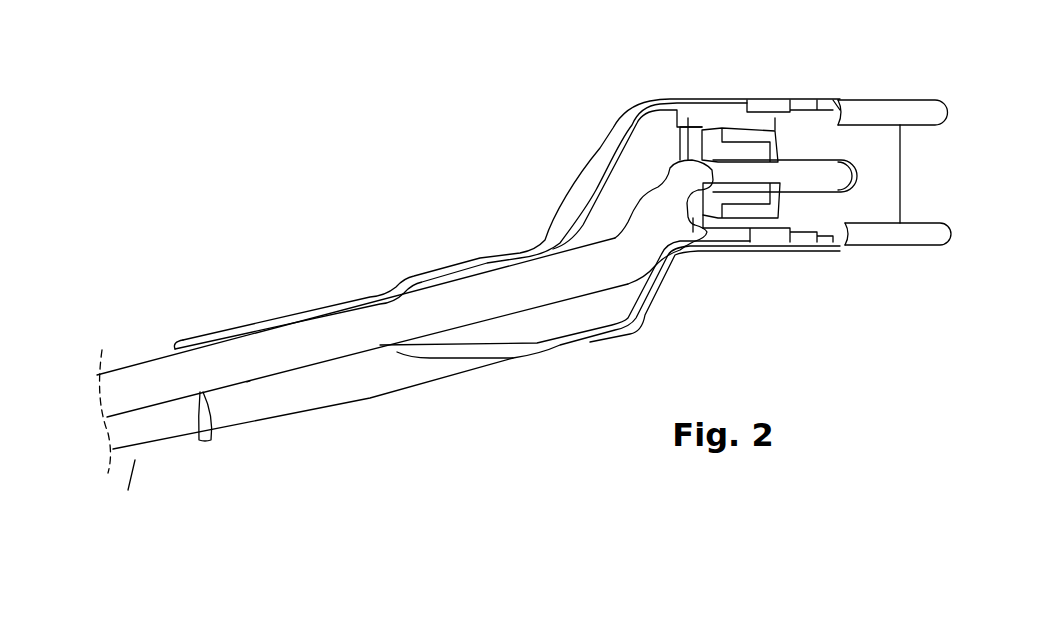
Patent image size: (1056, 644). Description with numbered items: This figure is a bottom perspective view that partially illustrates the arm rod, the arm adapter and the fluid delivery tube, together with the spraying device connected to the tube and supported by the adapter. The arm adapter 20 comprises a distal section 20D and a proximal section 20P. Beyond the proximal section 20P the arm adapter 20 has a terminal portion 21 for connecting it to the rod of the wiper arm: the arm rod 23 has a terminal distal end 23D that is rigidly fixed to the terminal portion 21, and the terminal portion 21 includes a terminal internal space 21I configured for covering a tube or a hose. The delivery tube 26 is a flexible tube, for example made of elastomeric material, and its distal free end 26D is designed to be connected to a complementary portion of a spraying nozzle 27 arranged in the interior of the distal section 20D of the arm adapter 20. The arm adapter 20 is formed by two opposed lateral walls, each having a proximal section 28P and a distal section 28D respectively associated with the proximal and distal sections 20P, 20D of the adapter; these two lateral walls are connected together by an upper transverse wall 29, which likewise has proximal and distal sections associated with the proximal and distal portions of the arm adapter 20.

The arm adapter 20 is at (567, 143).
The distal section 20D is at (878, 97).
The proximal section 20P is at (488, 363).
The terminal portion 21 is at (296, 418).
The terminal internal space 21I is at (247, 382).
The arm rod 23 is at (127, 490).
The terminal distal end 23D is at (170, 417).
The delivery tube 26 is at (292, 350).
The distal free end 26D is at (665, 207).
The spraying nozzle 27 is at (862, 167).
The distal section of lateral wall 28D is at (828, 106).
The proximal section of lateral wall 28P is at (490, 258).
The upper transverse wall 29 is at (903, 197).